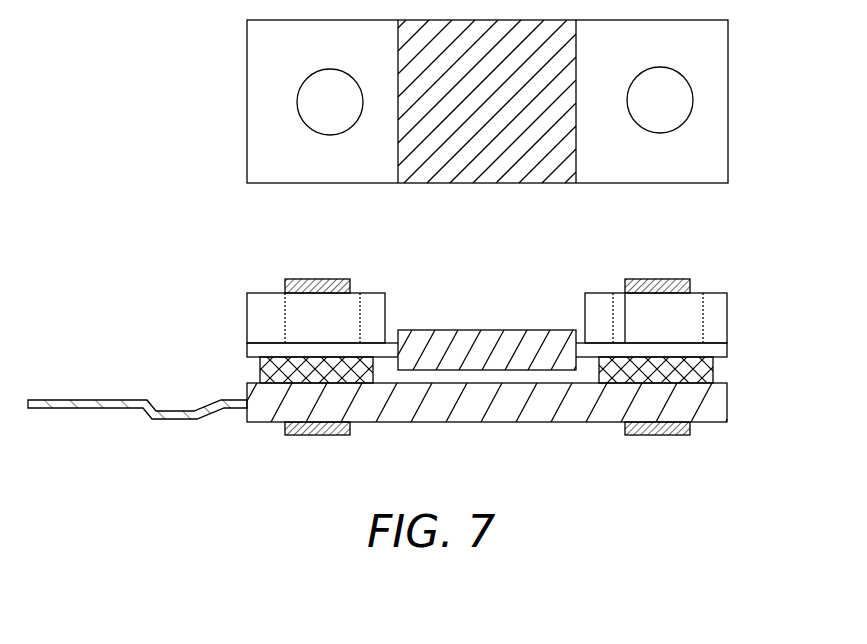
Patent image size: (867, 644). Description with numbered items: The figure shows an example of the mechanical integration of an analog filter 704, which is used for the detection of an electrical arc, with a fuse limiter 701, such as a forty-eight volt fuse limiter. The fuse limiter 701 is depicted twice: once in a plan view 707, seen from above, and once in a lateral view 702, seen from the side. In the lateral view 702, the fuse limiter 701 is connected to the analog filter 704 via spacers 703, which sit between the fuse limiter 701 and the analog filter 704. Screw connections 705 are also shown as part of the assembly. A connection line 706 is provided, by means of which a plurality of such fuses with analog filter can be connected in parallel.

The fuse limiter 701 is at (729, 38).
The lateral view 702 is at (139, 324).
The spacers 703 is at (259, 368).
The analog filter 704 is at (728, 400).
The screw connections 705 is at (386, 301).
The connection line 706 is at (113, 409).
The plan view 707 is at (197, 89).